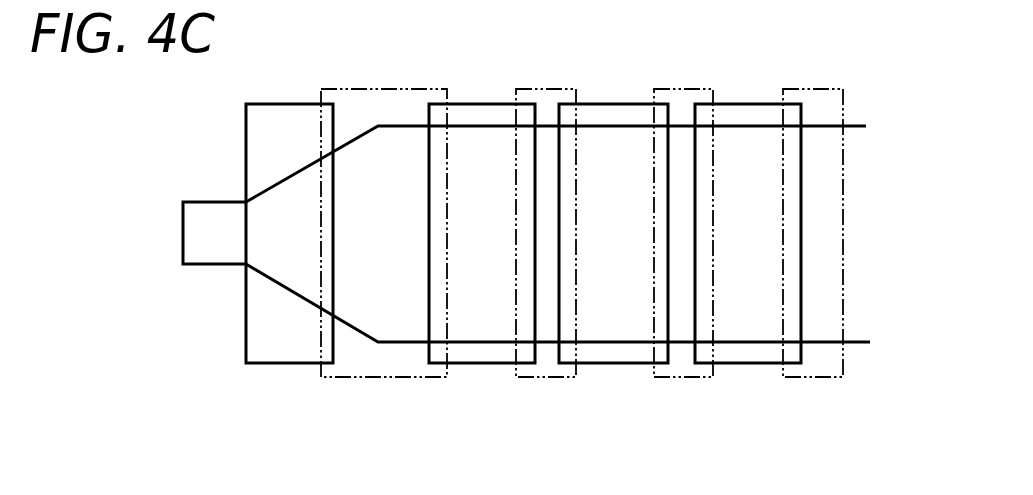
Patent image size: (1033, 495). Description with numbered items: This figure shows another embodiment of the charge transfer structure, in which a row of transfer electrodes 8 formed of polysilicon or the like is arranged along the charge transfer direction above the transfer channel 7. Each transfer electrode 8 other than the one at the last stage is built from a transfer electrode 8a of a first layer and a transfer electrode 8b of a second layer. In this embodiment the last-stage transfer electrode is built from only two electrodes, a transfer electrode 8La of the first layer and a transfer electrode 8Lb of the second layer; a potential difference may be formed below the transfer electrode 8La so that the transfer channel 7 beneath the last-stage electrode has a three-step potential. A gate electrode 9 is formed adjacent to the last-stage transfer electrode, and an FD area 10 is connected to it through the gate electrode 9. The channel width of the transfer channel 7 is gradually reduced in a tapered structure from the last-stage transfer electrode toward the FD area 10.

The transfer channel 7 is at (746, 125).
The transfer electrode 8 is at (523, 429).
The transfer electrode of a first layer 8La is at (340, 378).
The transfer electrode of a second layer 8Lb is at (470, 363).
The transfer electrode of a first layer 8a is at (552, 378).
The transfer electrode of a second layer 8b is at (610, 363).
The gate electrode 9 is at (290, 364).
The FD area 10 is at (213, 265).